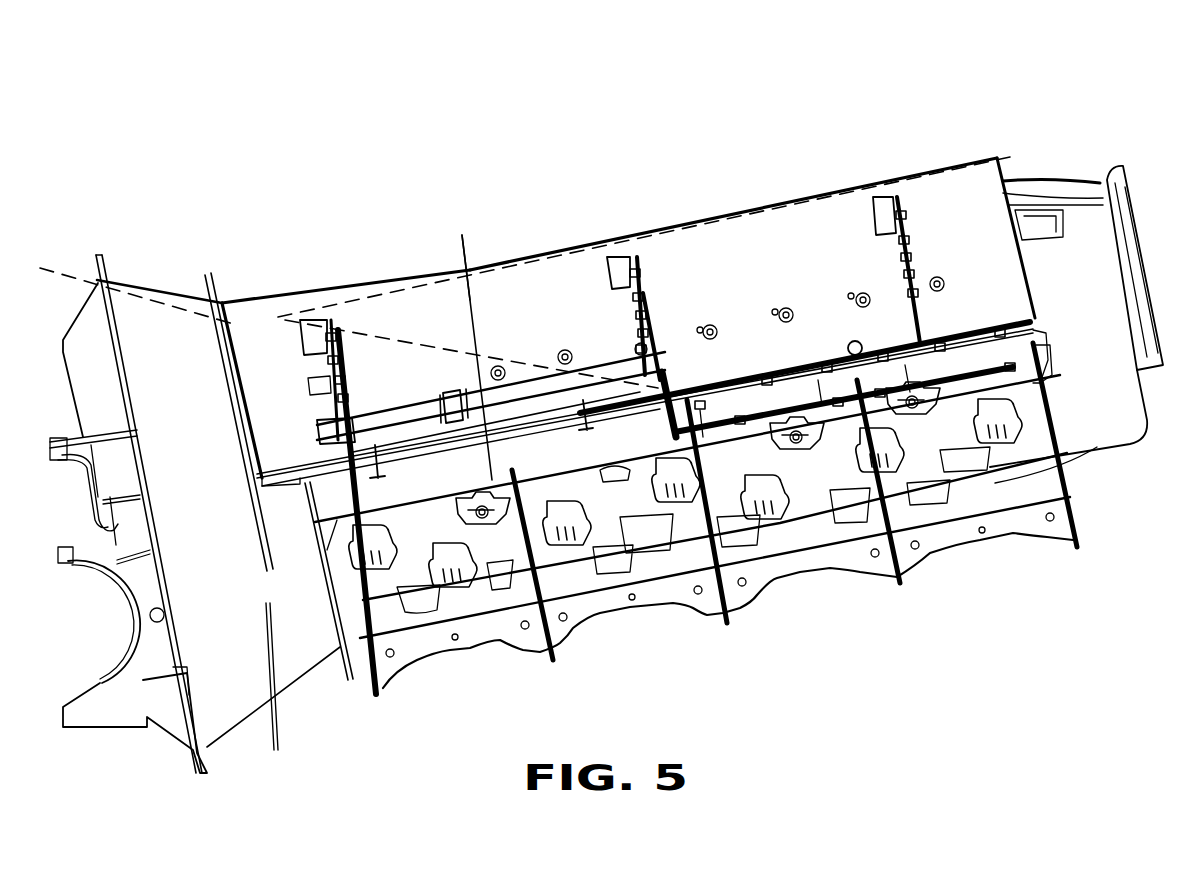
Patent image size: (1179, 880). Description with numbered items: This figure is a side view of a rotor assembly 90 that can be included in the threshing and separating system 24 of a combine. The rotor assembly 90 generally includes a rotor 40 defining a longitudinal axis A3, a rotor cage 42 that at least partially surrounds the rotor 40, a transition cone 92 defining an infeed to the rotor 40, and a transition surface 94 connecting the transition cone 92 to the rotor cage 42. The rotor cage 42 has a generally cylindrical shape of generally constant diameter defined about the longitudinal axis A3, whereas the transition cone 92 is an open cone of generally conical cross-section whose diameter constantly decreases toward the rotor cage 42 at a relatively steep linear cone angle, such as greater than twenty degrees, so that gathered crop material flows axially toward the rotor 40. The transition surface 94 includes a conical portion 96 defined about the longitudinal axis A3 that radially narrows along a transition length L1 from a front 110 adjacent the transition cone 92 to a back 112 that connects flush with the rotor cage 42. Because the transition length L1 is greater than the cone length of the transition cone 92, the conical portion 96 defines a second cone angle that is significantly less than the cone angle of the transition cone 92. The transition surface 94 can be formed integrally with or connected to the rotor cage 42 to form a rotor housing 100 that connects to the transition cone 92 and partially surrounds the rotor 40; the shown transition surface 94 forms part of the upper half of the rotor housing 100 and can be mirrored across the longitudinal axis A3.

The threshing and separating system 24 is at (673, 75).
The rotor 40 is at (805, 490).
The rotor cage 42 is at (722, 210).
The rotor assembly 90 is at (578, 130).
The transition cone 92 is at (183, 297).
The transition surface 94 is at (350, 288).
The conical portion 96 is at (398, 386).
The rotor housing 100 is at (478, 240).
The front 110 is at (232, 373).
The back 112 is at (483, 335).
The transition length L1 is at (460, 247).
The longitudinal axis A3 is at (793, 370).